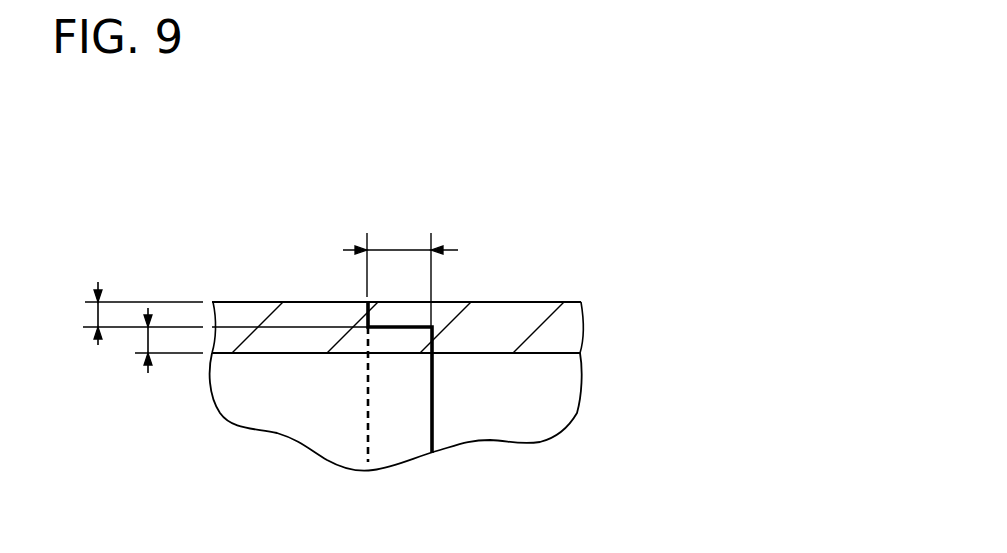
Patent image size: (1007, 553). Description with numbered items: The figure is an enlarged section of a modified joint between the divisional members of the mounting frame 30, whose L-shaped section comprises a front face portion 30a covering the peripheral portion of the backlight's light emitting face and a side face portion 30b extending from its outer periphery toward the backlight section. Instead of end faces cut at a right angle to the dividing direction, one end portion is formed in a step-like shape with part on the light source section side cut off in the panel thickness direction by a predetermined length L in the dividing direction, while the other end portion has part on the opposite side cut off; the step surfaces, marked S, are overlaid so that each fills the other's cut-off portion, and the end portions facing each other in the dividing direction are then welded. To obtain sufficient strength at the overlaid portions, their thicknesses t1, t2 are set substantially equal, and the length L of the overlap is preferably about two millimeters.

The mounting frame 30 is at (571, 386).
The front face portion 30a is at (583, 323).
The side face portion 30b is at (583, 395).
The stepped portion S is at (366, 314).
The predetermined length L is at (401, 242).
The thickness of overlaid portion t1 is at (88, 315).
The thickness of overlaid portion t2 is at (138, 338).